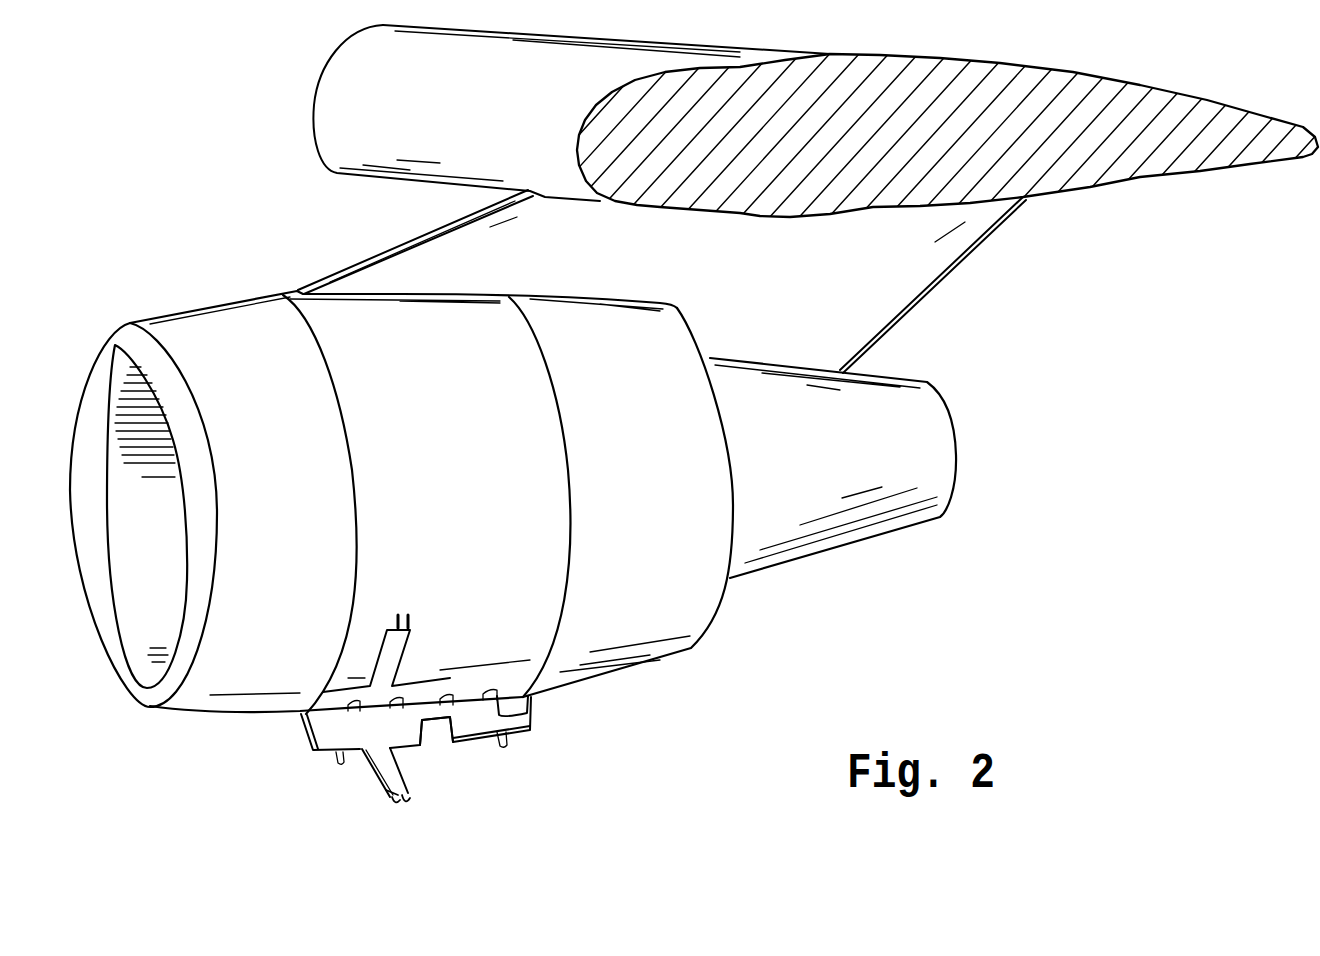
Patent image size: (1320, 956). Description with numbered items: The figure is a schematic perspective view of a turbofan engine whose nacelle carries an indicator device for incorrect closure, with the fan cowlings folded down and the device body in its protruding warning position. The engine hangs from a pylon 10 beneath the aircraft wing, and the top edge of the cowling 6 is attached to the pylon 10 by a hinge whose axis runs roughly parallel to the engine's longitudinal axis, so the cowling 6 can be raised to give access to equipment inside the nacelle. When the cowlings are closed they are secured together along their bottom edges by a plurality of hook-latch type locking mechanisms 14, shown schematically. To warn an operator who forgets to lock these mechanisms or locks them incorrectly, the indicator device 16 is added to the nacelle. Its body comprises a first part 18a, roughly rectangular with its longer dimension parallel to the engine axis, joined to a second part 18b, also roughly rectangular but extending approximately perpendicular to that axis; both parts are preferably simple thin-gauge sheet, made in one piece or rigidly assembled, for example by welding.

The left hand cowling 6 is at (401, 392).
The pylon 10 is at (867, 247).
The locking mechanisms 14 is at (530, 713).
The indicator device 16 is at (355, 794).
The first part 18a is at (470, 723).
The second part 18b is at (390, 775).